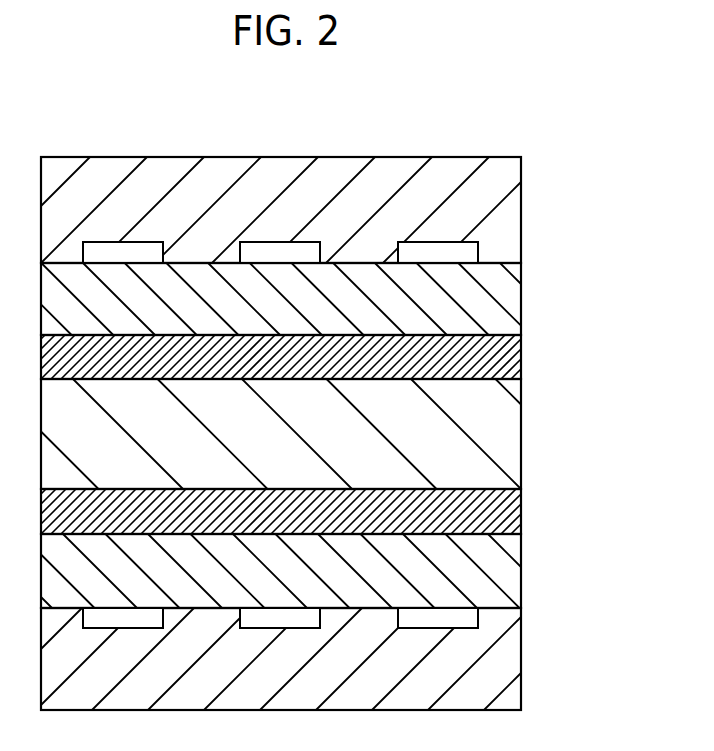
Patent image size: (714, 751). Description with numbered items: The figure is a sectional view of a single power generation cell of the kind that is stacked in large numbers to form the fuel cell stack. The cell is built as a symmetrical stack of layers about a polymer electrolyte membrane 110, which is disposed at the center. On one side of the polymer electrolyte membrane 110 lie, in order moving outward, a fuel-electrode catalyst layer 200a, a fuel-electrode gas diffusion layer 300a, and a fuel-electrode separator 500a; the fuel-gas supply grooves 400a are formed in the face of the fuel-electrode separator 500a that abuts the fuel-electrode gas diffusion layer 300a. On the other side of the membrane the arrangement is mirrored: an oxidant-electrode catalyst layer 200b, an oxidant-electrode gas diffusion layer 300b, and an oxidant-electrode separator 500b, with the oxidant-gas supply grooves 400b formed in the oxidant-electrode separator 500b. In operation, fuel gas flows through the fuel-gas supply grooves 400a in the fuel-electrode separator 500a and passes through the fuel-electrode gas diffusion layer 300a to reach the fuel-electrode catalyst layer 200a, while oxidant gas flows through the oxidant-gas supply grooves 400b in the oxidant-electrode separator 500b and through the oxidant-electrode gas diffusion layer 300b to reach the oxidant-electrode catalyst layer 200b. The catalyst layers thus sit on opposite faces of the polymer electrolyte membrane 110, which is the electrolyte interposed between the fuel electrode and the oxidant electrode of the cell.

The polymer electrolyte membrane 110 is at (517, 434).
The fuel-electrode catalyst layer 200a is at (517, 360).
The oxidant-electrode catalyst layer 200b is at (517, 512).
The fuel-electrode gas diffusion layer 300a is at (517, 300).
The oxidant-electrode gas diffusion layer 300b is at (517, 550).
The fuel-gas supply grooves 400a is at (478, 258).
The oxidant-gas supply grooves 400b is at (478, 609).
The fuel-electrode separator 500a is at (517, 192).
The oxidant-electrode separator 500b is at (518, 687).